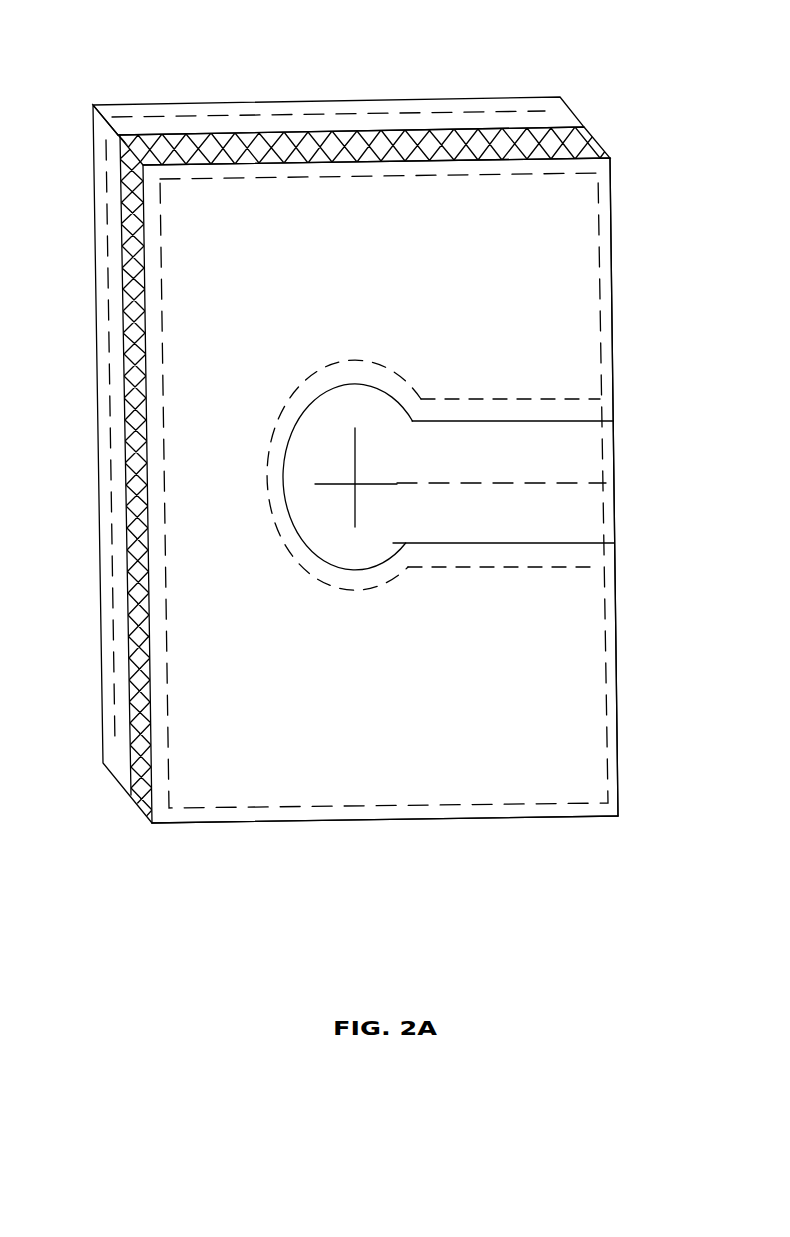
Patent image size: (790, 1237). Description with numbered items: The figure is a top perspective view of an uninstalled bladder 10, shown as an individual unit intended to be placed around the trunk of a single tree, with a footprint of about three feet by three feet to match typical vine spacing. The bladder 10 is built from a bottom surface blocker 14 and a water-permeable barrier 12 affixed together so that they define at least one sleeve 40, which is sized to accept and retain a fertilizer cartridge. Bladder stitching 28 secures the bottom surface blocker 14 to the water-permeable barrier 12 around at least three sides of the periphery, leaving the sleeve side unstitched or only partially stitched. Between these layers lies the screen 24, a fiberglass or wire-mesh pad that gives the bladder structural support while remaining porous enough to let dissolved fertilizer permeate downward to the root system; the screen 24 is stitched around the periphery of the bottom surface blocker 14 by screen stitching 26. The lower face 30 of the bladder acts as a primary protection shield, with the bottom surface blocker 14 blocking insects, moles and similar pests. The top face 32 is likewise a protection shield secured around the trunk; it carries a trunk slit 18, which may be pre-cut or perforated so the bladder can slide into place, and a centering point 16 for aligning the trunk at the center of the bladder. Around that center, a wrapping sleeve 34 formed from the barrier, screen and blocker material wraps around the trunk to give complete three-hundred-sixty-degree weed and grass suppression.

The bladder 10 is at (638, 247).
The water-permeable barrier 12 is at (555, 328).
The bottom surface blocker 14 is at (402, 98).
The centering point 16 is at (350, 485).
The trunk slit 18 is at (562, 482).
The screen 24 is at (240, 148).
The screen stitching 26 is at (598, 202).
The bladder stitching 28 is at (528, 110).
The lower face 30 is at (102, 690).
The top face 32 is at (387, 752).
The wrapping sleeve 34 is at (293, 430).
The sleeve 40 is at (611, 278).